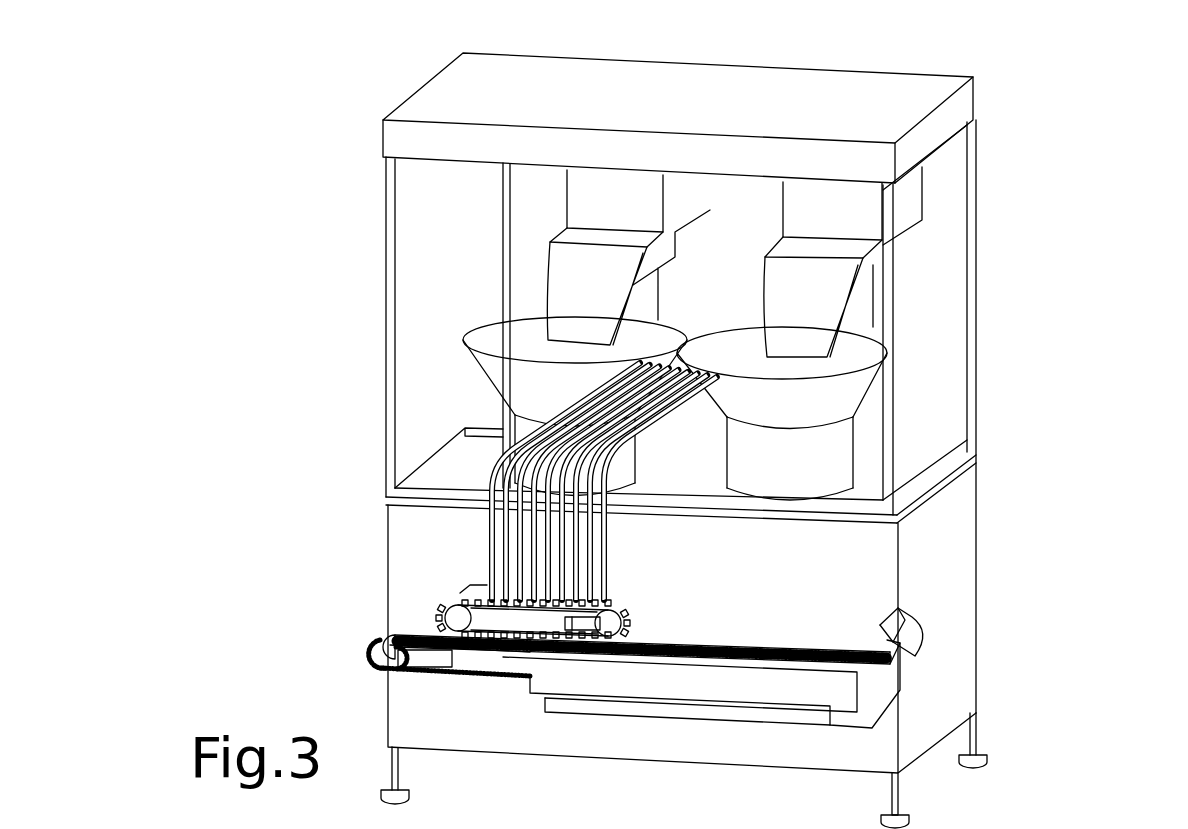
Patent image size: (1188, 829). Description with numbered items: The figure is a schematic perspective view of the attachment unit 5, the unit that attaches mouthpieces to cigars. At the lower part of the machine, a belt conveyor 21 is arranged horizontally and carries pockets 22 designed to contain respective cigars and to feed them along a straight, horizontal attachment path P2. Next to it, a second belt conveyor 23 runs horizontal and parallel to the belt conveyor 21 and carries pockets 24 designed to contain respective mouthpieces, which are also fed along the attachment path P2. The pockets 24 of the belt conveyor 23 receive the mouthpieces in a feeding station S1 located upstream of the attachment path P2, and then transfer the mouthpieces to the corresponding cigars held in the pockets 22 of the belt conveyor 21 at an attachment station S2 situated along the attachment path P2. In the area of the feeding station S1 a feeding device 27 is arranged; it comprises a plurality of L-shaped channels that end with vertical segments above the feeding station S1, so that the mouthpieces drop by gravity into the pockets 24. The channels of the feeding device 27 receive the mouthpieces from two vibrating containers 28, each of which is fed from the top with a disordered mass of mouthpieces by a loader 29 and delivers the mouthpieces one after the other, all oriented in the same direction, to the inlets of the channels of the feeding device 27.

The attachment unit 5 is at (1064, 647).
The belt conveyor 21 is at (362, 656).
The pockets 22 is at (746, 650).
The belt conveyor 23 is at (435, 620).
The pockets 24 is at (622, 636).
The feeding device 27 is at (470, 527).
The vibrating containers 28 is at (545, 383).
The loader 29 is at (580, 280).
The feeding station S1 is at (543, 600).
The attachment station S2 is at (508, 648).
The attachment path P2 is at (655, 648).